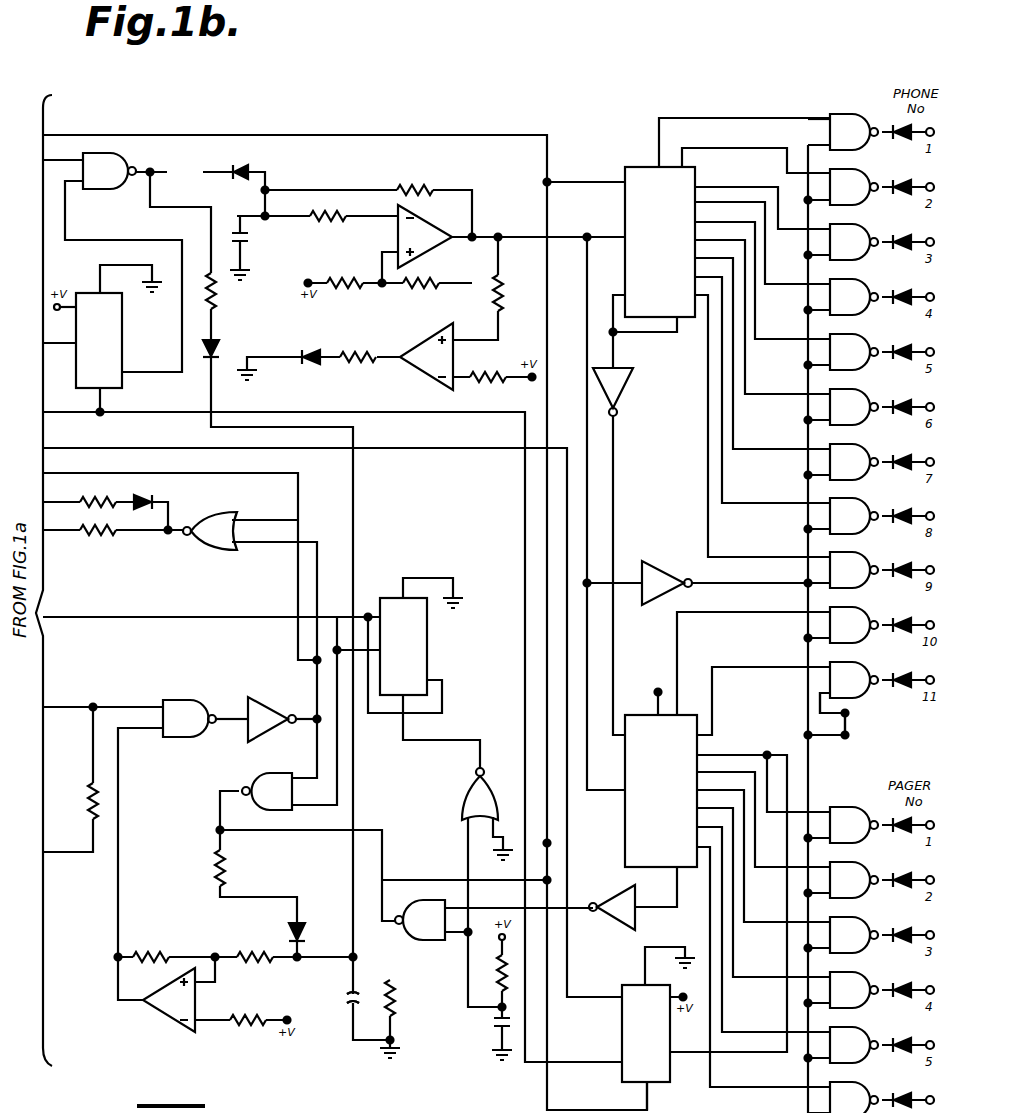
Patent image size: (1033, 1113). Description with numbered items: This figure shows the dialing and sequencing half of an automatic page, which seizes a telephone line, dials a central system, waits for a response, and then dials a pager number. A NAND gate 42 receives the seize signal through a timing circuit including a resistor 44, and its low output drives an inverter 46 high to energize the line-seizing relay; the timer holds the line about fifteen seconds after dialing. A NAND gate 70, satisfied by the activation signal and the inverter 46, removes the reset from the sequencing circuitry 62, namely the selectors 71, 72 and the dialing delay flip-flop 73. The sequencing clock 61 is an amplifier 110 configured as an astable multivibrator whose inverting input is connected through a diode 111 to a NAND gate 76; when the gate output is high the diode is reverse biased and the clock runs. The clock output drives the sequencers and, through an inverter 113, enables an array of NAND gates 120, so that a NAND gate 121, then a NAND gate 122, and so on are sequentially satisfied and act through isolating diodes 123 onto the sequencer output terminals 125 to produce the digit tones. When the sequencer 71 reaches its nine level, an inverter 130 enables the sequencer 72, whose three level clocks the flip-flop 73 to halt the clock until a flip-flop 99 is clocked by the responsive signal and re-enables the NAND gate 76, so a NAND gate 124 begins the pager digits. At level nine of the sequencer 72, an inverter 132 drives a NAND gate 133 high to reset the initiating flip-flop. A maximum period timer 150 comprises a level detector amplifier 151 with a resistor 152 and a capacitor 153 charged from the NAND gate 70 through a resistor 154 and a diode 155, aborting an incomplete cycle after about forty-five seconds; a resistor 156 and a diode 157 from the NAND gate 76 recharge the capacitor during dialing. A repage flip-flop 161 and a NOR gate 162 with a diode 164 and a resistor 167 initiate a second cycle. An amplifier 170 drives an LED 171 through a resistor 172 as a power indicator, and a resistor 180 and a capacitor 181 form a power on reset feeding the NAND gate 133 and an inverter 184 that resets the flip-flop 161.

The NAND gate 42 is at (204, 700).
The resistor 44 is at (88, 800).
The inverter 46 is at (285, 686).
The sequencing clock 61 is at (401, 175).
The sequencing circuitry 62 is at (667, 462).
The NAND gate 70 is at (258, 776).
The sequencing selector 71 is at (640, 166).
The sequencing selector 72 is at (625, 862).
The dialing delay flip-flop 73 is at (622, 1081).
The NAND gate 76 is at (96, 190).
The flip-flop 99 is at (122, 385).
The amplifier 110 is at (432, 205).
The diode 111 is at (243, 170).
The inverter 113 is at (655, 563).
The array of NAND gates 120 is at (838, 115).
The NAND gate 121 is at (830, 118).
The NAND gate 122 is at (866, 171).
The isolating diodes 123 is at (893, 122).
The NAND gate 124 is at (840, 807).
The sequencer output terminals 125 is at (850, 735).
The inverter 130 is at (634, 372).
The inverter 132 is at (620, 928).
The NAND gate 133 is at (418, 900).
The maximum period timer 150 is at (272, 1004).
The amplifier 151 is at (160, 1022).
The resistor 152 is at (396, 1002).
The capacitor 153 is at (348, 1033).
The resistor 154 is at (227, 876).
The diode 155 is at (289, 936).
The resistor 156 is at (206, 300).
The diode 157 is at (203, 348).
The repage flip-flop 161 is at (382, 598).
The NOR gate 162 is at (214, 548).
The diode 164 is at (155, 500).
The resistor 167 is at (98, 545).
The amplifier 170 is at (425, 370).
The LED 171 is at (306, 350).
The resistor 172 is at (352, 352).
The resistor 180 is at (496, 985).
The capacitor 181 is at (494, 1033).
The inverter 184 is at (462, 804).